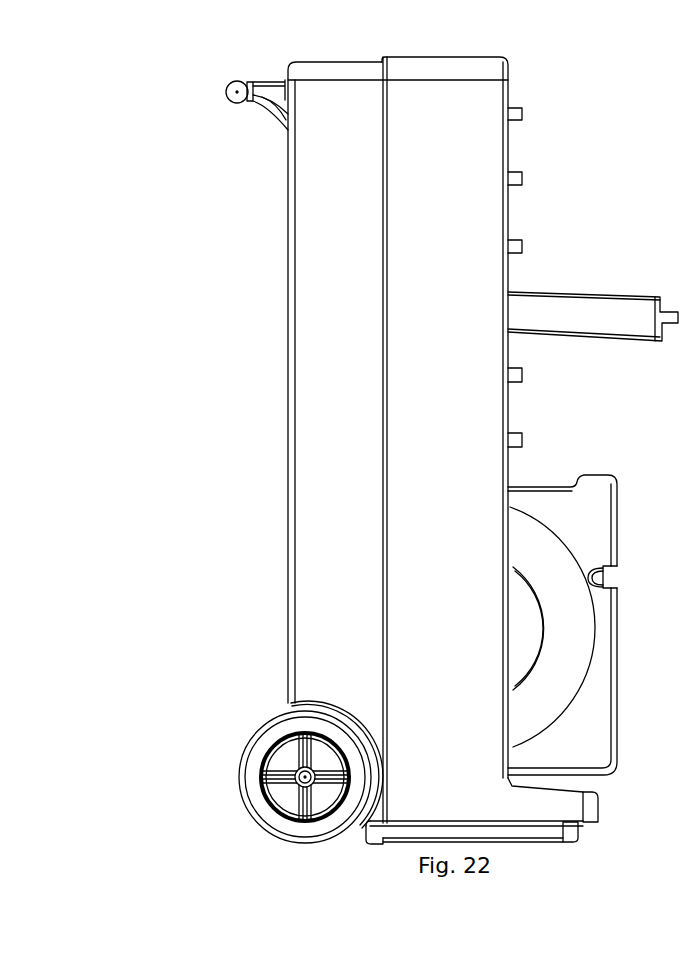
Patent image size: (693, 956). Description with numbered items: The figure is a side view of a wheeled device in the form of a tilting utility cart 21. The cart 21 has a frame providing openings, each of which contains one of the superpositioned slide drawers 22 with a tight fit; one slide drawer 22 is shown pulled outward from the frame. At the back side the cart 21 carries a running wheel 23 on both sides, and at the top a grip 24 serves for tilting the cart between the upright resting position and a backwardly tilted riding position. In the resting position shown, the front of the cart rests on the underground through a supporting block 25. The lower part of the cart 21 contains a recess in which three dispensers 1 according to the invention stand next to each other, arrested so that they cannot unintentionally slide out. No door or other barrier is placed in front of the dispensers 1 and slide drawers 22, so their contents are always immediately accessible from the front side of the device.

The dispenser 1 is at (638, 625).
The tilting utility cart 21 is at (228, 313).
The slide drawer 22 is at (537, 123).
The running wheel 23 is at (262, 727).
The grip 24 is at (224, 96).
The supporting block 25 is at (571, 842).